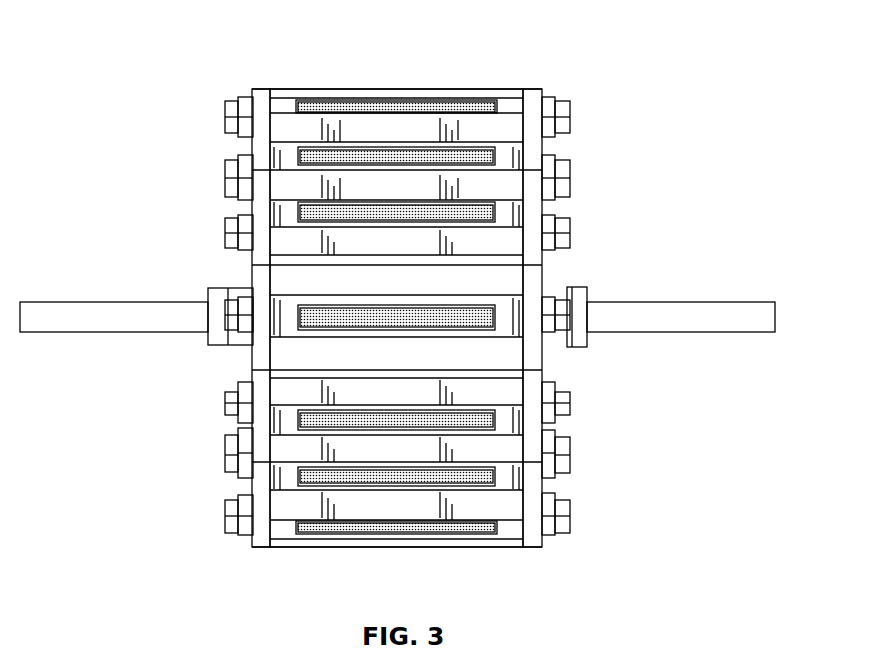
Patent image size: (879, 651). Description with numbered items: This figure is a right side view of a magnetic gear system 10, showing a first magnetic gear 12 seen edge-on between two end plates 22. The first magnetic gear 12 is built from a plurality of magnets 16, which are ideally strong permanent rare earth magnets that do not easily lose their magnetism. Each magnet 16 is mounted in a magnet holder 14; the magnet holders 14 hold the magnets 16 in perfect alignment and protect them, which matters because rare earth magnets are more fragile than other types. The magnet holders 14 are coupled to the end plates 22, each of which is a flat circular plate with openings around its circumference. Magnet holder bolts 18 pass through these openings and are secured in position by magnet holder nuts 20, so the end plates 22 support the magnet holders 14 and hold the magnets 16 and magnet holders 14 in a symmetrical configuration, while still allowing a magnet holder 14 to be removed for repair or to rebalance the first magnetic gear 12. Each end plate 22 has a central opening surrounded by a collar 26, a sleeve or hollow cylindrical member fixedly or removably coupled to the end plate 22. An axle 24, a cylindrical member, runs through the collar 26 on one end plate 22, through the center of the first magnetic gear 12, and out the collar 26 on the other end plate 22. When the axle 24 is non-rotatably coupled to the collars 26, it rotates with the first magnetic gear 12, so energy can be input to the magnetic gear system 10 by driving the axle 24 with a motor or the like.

The magnetic gear system 10 is at (153, 26).
The first magnetic gear 12 is at (380, 89).
The magnet holder 14 is at (296, 103).
The magnet 16 is at (340, 104).
The magnet holder bolt 18 is at (232, 100).
The magnet holder nut 20 is at (248, 99).
The end plate 22 is at (262, 90).
The axle 24 is at (88, 301).
The collar 26 is at (215, 312).